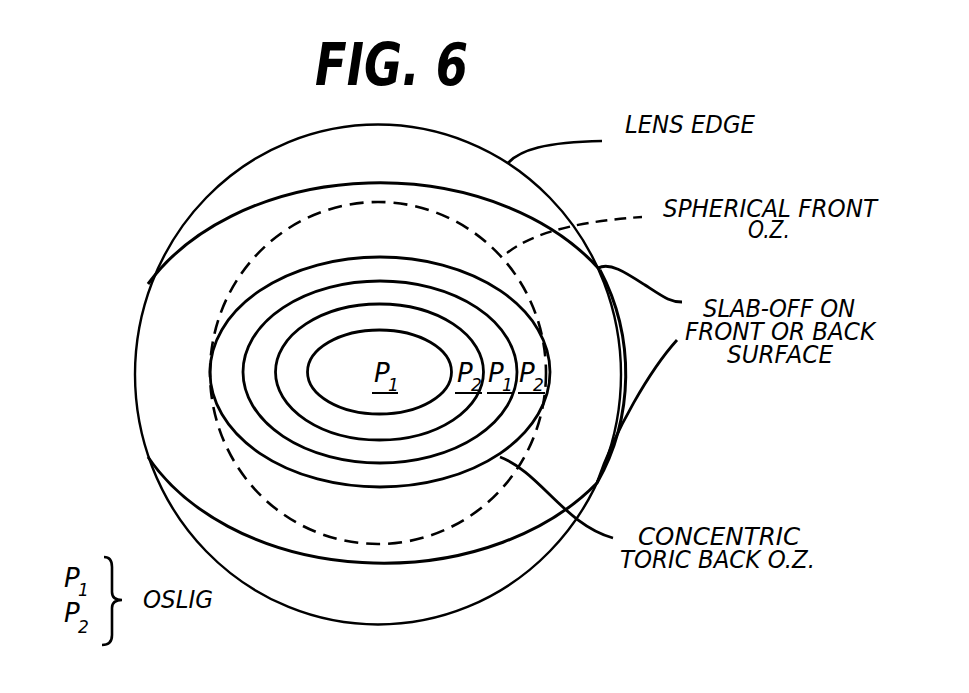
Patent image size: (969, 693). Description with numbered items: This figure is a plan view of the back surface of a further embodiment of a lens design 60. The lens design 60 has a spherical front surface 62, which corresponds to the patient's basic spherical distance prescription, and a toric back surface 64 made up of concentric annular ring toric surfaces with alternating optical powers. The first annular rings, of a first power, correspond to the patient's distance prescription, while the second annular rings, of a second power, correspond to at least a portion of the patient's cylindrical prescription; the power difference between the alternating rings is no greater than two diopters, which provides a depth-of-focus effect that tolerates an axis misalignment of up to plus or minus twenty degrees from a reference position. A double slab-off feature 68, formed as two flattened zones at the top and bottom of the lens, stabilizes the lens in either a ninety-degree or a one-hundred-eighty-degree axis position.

The lens design 60 is at (120, 215).
The spherical front surface 62 is at (478, 517).
The toric back surface 64 is at (158, 362).
The double slab-off feature 68 is at (395, 167).